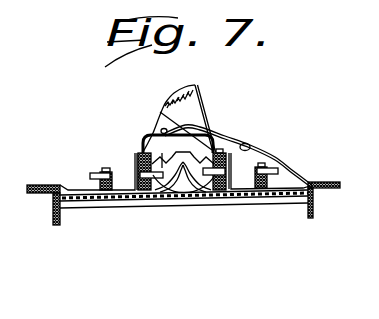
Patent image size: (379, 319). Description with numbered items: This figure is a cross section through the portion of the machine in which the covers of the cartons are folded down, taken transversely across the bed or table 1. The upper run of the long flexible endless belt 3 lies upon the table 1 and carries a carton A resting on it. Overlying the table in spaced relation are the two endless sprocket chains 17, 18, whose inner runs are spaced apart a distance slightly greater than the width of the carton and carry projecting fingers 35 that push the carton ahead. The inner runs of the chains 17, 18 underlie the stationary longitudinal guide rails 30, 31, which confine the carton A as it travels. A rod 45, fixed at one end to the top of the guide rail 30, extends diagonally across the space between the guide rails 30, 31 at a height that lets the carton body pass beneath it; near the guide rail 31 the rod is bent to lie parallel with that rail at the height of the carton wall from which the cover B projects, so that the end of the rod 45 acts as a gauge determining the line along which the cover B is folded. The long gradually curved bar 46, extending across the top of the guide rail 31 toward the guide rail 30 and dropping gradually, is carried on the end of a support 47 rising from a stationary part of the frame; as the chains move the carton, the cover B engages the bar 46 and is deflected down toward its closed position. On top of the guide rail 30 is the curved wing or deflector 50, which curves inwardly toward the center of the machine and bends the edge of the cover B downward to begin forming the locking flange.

The bed or table 1 is at (76, 201).
The endless belt 3 is at (285, 188).
The sprocket chain 17 is at (108, 168).
The sprocket chain 18 is at (266, 165).
The guide rail 30 is at (140, 153).
The guide rail 31 is at (222, 150).
The projecting fingers 35 is at (91, 174).
The rod 45 is at (207, 110).
The bar 46 is at (260, 139).
The support 47 is at (266, 156).
The curved wing or deflector 50 is at (161, 116).
The carton A is at (183, 196).
The cover B is at (200, 91).